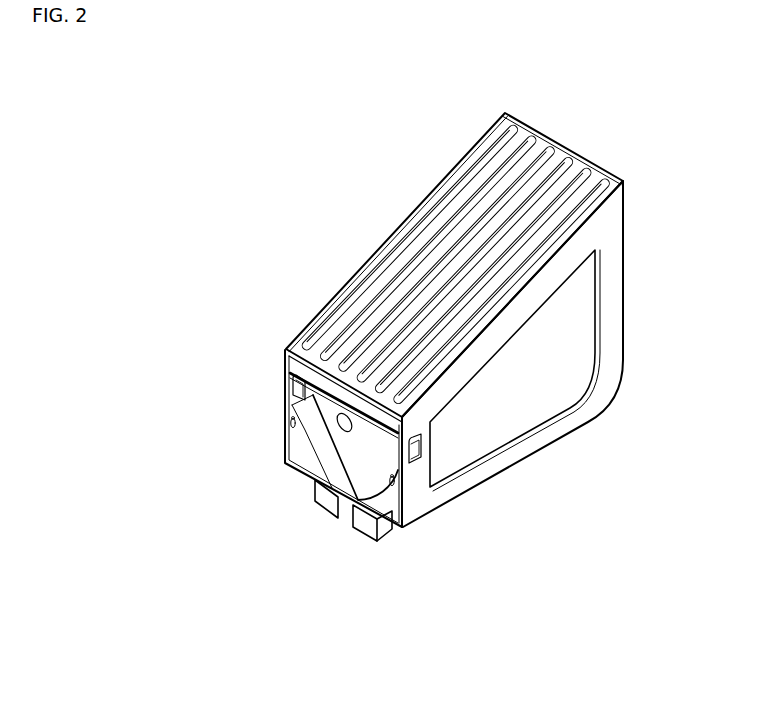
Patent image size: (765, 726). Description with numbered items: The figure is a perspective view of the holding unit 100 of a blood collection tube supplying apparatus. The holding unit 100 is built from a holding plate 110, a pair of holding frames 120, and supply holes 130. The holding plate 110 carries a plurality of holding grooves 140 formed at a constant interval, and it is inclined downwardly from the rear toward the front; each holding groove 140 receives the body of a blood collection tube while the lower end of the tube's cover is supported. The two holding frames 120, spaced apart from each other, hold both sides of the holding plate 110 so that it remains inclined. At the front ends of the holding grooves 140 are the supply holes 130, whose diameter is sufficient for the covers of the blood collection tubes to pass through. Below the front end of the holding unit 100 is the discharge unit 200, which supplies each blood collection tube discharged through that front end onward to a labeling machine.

The holding unit 100 is at (322, 243).
The holding plate 110 is at (563, 147).
The holding frames 120 is at (407, 218).
The supply holes 130 is at (300, 340).
The holding grooves 140 is at (470, 178).
The discharge unit 200 is at (336, 543).